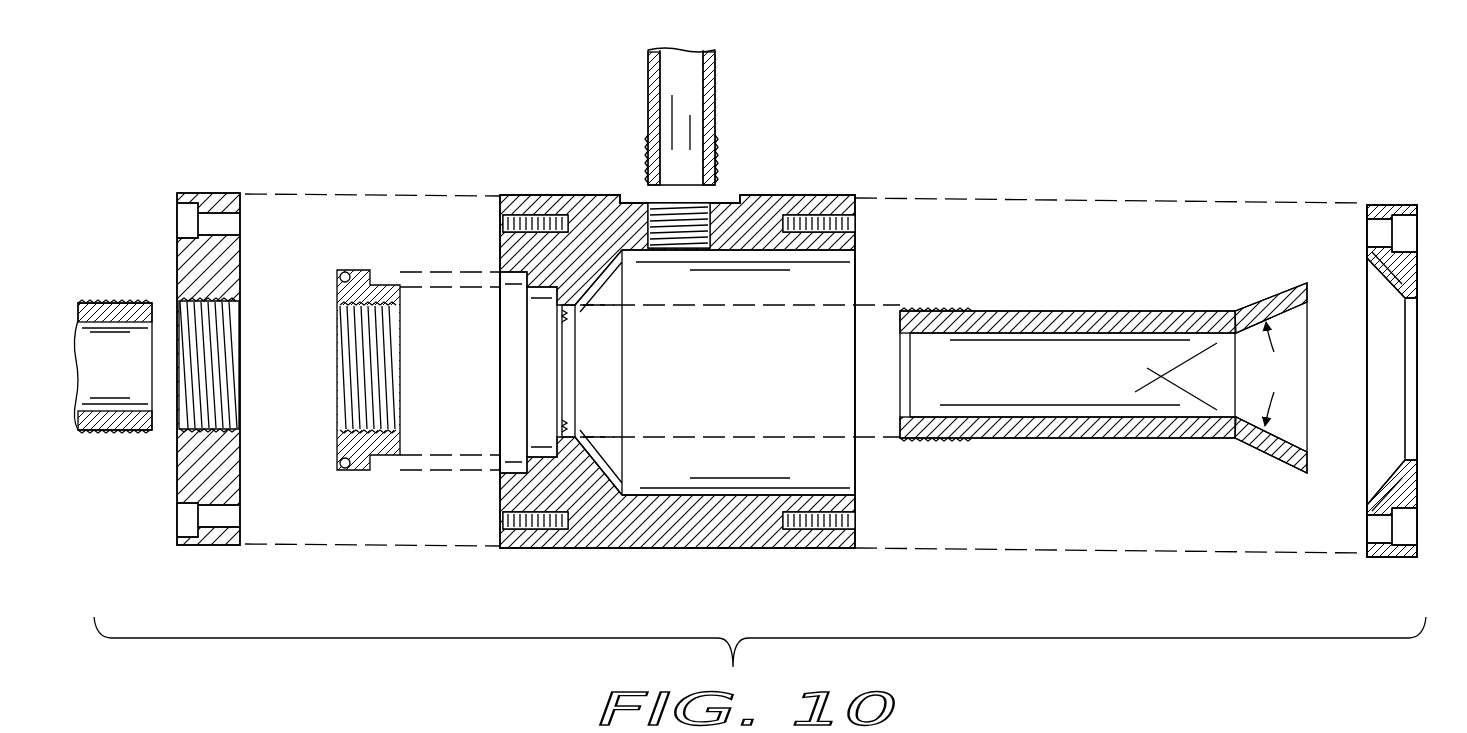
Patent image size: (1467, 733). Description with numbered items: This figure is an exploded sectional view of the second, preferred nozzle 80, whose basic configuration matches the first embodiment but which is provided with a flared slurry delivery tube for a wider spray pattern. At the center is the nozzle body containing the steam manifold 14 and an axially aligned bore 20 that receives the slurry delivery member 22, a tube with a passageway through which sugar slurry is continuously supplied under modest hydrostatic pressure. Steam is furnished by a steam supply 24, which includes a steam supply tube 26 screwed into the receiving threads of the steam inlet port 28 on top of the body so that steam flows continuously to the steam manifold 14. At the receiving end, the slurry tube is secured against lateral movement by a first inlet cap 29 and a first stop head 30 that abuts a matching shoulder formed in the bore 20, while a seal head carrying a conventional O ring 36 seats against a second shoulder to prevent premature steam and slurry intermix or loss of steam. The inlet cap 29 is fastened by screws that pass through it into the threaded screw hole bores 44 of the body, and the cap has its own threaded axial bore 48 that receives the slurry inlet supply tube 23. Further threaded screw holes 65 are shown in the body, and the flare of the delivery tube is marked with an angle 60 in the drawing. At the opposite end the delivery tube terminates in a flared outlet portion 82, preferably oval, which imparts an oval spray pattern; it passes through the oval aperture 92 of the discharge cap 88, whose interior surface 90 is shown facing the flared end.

The steam manifold 14 is at (683, 480).
The axially aligned bore 20 is at (580, 420).
The slurry delivery member 22 is at (1117, 310).
The slurry inlet supply tube 23 is at (110, 303).
The steam supply 24 is at (722, 75).
The steam supply tube 26 is at (713, 115).
The steam inlet port 28 is at (652, 210).
The first inlet cap 29 is at (215, 193).
The first stop head 30 is at (382, 455).
The O ring 36 is at (343, 272).
The threaded screw hole bores 44 is at (512, 212).
The axial bore 48 is at (240, 318).
The flare angle 60 is at (1271, 374).
The set screw 65 is at (856, 226).
The nozzle 80 is at (822, 192).
The flared outlet portion 82 is at (1295, 318).
The discharge cap 88 is at (1390, 558).
The interior surface 90 is at (1367, 487).
The aperture 92 is at (1418, 340).